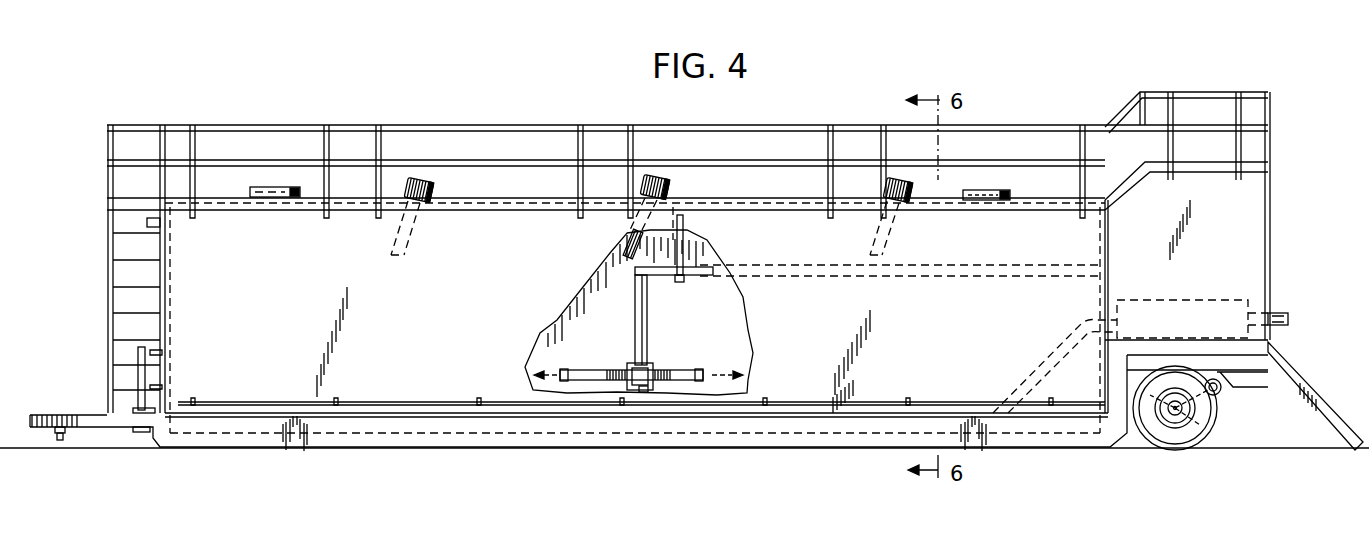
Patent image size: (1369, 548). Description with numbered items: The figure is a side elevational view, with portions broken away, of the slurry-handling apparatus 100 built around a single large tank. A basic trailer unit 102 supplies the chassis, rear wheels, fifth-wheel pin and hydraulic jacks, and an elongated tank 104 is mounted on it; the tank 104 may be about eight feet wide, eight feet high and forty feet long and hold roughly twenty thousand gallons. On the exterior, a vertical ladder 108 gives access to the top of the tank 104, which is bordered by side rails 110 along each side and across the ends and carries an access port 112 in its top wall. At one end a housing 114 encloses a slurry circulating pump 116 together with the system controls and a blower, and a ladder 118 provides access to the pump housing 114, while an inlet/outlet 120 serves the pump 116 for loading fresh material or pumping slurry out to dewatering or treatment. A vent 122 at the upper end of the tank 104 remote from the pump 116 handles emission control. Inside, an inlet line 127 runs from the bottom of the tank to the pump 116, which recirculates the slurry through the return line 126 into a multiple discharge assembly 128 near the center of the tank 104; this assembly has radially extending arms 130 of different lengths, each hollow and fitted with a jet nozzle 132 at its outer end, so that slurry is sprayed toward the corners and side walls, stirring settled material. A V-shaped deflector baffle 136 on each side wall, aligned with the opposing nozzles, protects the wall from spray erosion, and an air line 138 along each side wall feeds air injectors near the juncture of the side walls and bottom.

The embodiment of the invention 100 is at (435, 124).
The trailer unit 102 is at (270, 449).
The tank 104 is at (485, 309).
The vertical ladder 108 is at (107, 318).
The side rails 110 is at (340, 130).
The access port 112 is at (992, 188).
The housing 114 is at (1243, 225).
The slurry circulating pump 116 is at (1180, 305).
The ladder 118 is at (1318, 410).
The inlet/outlet 120 is at (1282, 312).
The vent 122 is at (145, 222).
The return line 126 is at (707, 270).
The inlet line 127 is at (1047, 358).
The multiple discharge assembly 128 is at (655, 364).
The radially extending arms 130 is at (688, 370).
The jet nozzle 132 is at (707, 372).
The deflector baffle 136 is at (644, 392).
The air line 138 is at (410, 406).